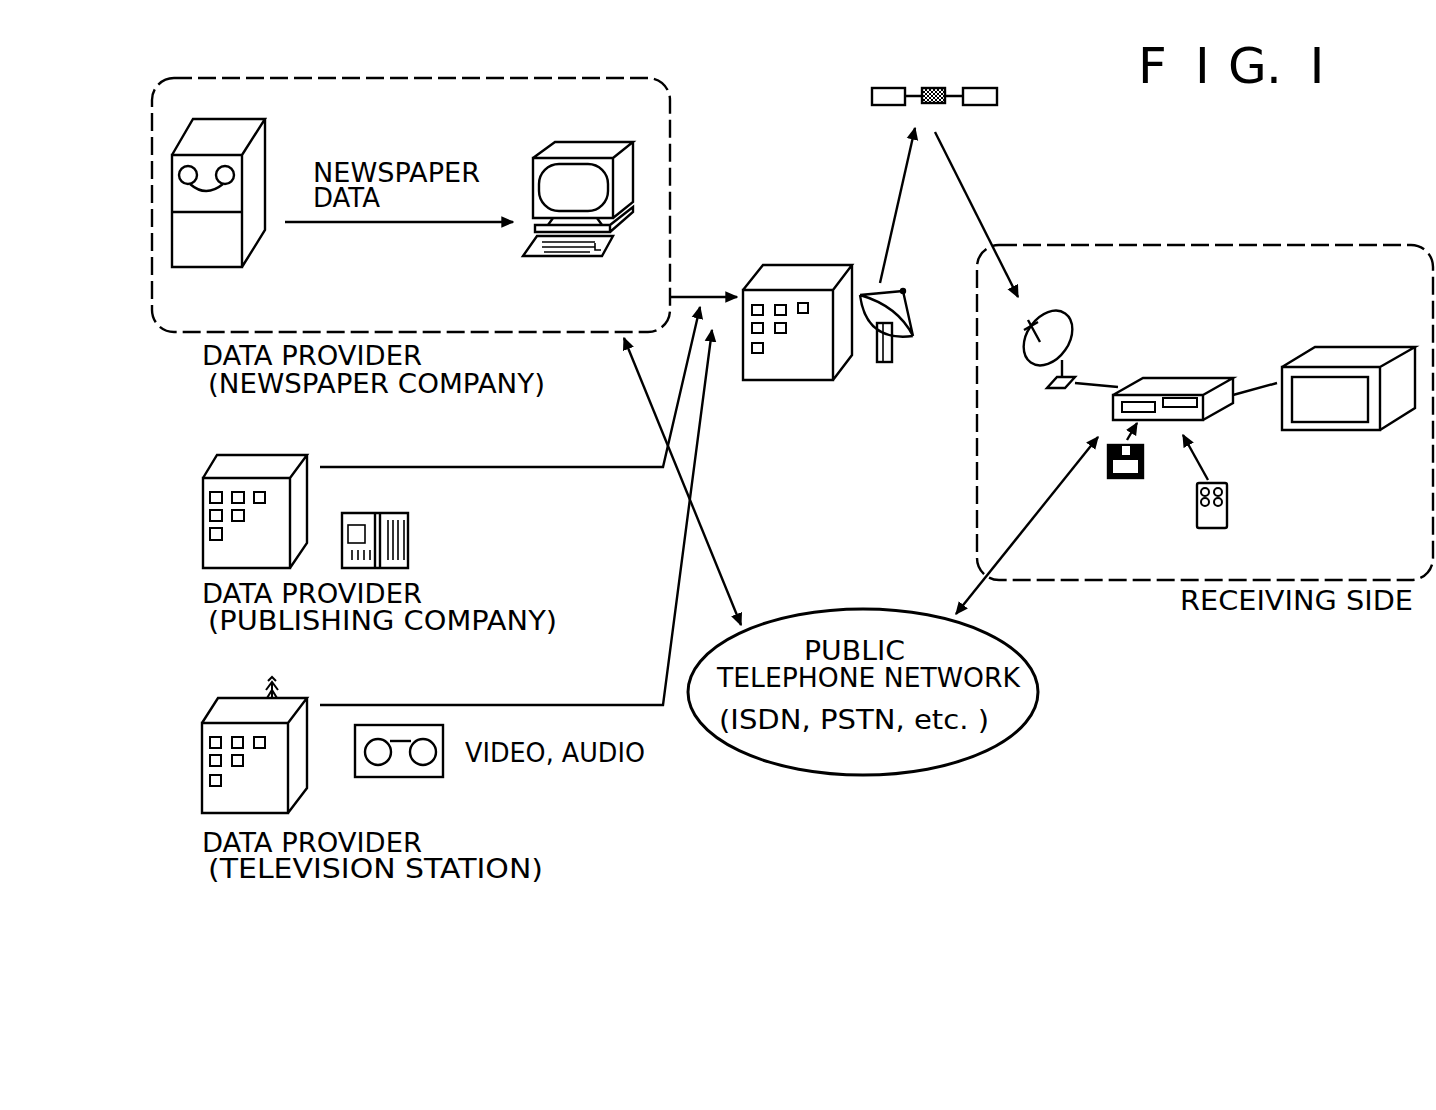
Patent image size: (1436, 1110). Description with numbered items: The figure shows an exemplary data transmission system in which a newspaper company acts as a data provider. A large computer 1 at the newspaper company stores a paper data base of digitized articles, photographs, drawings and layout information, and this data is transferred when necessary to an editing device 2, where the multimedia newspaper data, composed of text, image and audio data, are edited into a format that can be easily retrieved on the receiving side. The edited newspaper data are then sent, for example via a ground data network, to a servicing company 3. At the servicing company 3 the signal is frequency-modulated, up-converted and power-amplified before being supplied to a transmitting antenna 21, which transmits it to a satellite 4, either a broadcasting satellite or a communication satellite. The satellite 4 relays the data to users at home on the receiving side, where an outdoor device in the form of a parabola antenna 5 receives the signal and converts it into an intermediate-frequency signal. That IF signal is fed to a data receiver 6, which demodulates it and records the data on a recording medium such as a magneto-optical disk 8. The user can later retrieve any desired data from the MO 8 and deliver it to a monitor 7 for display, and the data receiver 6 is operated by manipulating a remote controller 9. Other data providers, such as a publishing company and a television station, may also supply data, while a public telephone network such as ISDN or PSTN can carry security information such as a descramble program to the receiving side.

The large computer 1 is at (253, 242).
The editing device 2 is at (597, 147).
The servicing company 3 is at (790, 266).
The satellite 4 is at (880, 88).
The outdoor device (parabola antenna) 5 is at (1072, 313).
The data receiver 6 is at (1160, 378).
The monitor 7 is at (1338, 347).
The magneto-optical disk (MO) 8 is at (1125, 480).
The remote controller 9 is at (1228, 500).
The transmitting antenna 21 is at (893, 352).